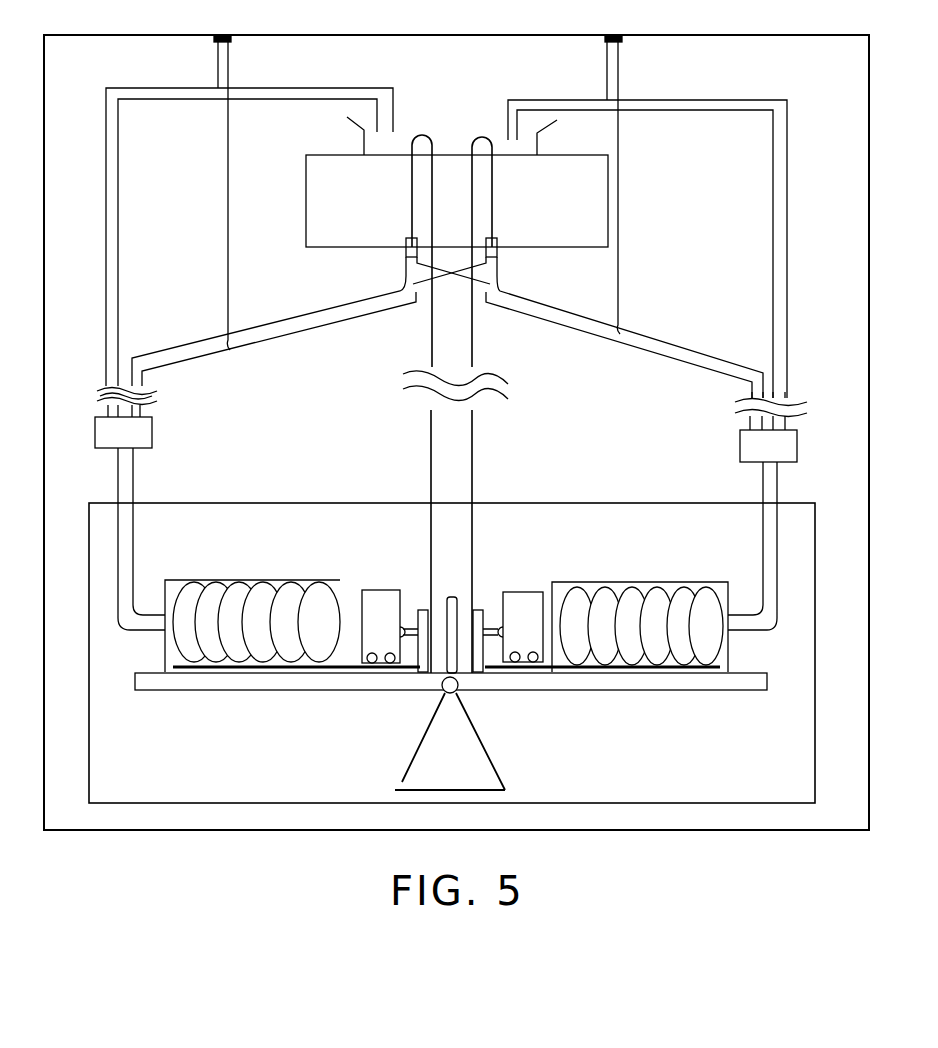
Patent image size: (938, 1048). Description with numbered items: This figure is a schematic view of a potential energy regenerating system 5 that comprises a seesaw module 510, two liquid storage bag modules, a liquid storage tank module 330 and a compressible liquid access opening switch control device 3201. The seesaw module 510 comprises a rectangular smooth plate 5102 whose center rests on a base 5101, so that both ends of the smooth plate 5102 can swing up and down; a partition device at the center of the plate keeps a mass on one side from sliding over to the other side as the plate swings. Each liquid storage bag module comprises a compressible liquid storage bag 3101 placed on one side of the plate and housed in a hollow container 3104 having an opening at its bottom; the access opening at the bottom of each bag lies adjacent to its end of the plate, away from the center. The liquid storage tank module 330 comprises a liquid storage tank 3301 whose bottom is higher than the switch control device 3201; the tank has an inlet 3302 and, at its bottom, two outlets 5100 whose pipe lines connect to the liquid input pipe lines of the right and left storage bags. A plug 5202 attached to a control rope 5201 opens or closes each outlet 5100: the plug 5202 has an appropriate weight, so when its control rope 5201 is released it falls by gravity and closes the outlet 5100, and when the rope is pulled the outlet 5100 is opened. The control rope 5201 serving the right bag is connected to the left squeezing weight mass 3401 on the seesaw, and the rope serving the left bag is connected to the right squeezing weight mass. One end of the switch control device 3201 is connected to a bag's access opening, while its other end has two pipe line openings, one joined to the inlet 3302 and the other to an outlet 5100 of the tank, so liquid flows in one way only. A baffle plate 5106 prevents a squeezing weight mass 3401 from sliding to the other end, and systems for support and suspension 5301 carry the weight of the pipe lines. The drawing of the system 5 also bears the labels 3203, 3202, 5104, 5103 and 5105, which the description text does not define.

The crystal growth apparatus 5 is at (456, 432).
The seesaw module 510 is at (452, 653).
The systems for support and suspension 5301 is at (232, 40).
The liquid storage tank 3301 is at (628, 197).
The inlet 3302 is at (540, 144).
The liquid storage tank module 330 is at (457, 201).
The plug 5202 is at (404, 246).
The outlet 5100 is at (392, 300).
The coupling 3203 is at (96, 390).
The flexible joint 3202 is at (146, 412).
The liquid access opening switch control device 3201 is at (149, 437).
The hollow container 3104 is at (288, 582).
The coil housing 5104 is at (728, 650).
The compressible liquid storage bag 3101 is at (232, 597).
The squeezing weight mass 3401 is at (383, 588).
The baffle plate 5106 is at (440, 675).
The central shaft 5103 is at (453, 595).
The control rope 5201 is at (482, 433).
The rectangular smooth plate 5102 is at (752, 692).
The ball joint 5105 is at (532, 691).
The base 5101 is at (496, 764).